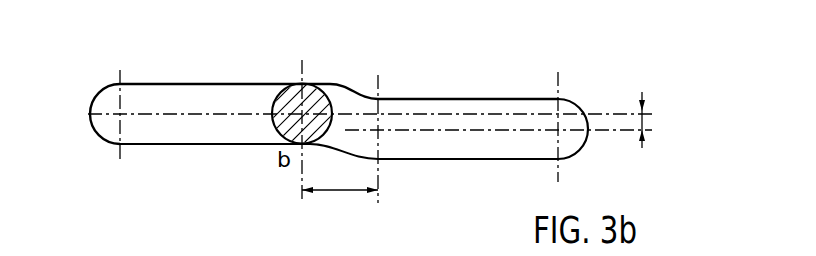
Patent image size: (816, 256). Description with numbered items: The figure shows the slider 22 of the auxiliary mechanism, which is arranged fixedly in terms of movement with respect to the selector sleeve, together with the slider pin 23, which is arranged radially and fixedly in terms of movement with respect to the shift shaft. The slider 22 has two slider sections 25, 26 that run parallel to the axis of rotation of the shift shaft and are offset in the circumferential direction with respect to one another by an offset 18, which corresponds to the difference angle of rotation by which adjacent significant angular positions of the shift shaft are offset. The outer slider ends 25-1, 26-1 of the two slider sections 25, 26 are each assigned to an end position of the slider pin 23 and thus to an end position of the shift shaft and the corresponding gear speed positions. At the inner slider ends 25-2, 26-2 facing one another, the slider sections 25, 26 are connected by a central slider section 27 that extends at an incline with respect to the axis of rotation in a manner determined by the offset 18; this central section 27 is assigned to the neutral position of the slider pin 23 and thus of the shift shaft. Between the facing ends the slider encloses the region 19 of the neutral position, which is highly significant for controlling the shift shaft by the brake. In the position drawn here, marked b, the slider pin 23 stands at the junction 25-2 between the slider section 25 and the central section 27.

The slider 22 is at (228, 66).
The slider end 25-1 is at (88, 118).
The slider section 25 is at (192, 145).
The slider end 25-2 is at (302, 83).
The central slider section 27 is at (348, 90).
The slider pin 23 is at (281, 136).
The slider end 26-2 is at (378, 98).
The slider section 26 is at (525, 160).
The slider end 26-1 is at (588, 130).
The region of the neutral position 19 is at (347, 192).
The offset 18 is at (645, 118).